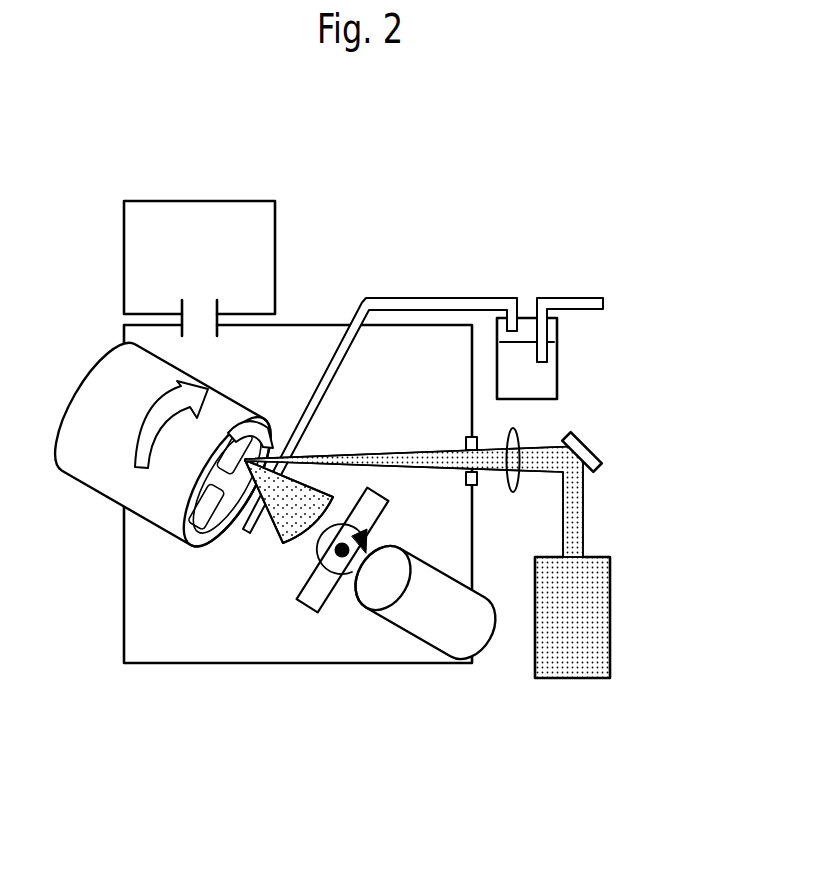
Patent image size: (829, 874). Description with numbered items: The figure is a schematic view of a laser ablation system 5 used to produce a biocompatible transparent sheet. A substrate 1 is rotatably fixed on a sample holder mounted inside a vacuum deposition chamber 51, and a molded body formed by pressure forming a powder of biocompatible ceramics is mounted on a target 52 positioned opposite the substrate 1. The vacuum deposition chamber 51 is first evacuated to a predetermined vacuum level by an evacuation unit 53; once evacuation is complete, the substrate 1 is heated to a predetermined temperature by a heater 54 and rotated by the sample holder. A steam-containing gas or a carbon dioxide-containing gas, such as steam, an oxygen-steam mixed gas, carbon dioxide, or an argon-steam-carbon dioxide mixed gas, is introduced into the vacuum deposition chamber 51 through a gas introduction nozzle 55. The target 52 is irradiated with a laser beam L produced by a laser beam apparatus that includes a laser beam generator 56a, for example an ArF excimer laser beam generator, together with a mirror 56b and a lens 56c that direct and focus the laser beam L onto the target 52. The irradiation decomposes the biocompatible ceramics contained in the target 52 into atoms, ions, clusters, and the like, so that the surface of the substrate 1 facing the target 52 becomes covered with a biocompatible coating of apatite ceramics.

The substrate 1 is at (322, 597).
The laser ablation system 5 is at (585, 284).
The vacuum deposition chamber 51 is at (232, 665).
The target 52 is at (237, 478).
The evacuation unit 53 is at (187, 200).
The heater 54 is at (437, 638).
The gas introduction nozzle 55 is at (448, 298).
The laser beam generator 56a is at (603, 620).
The mirror 56b is at (596, 448).
The lens 56c is at (518, 432).
The laser beam L is at (578, 503).